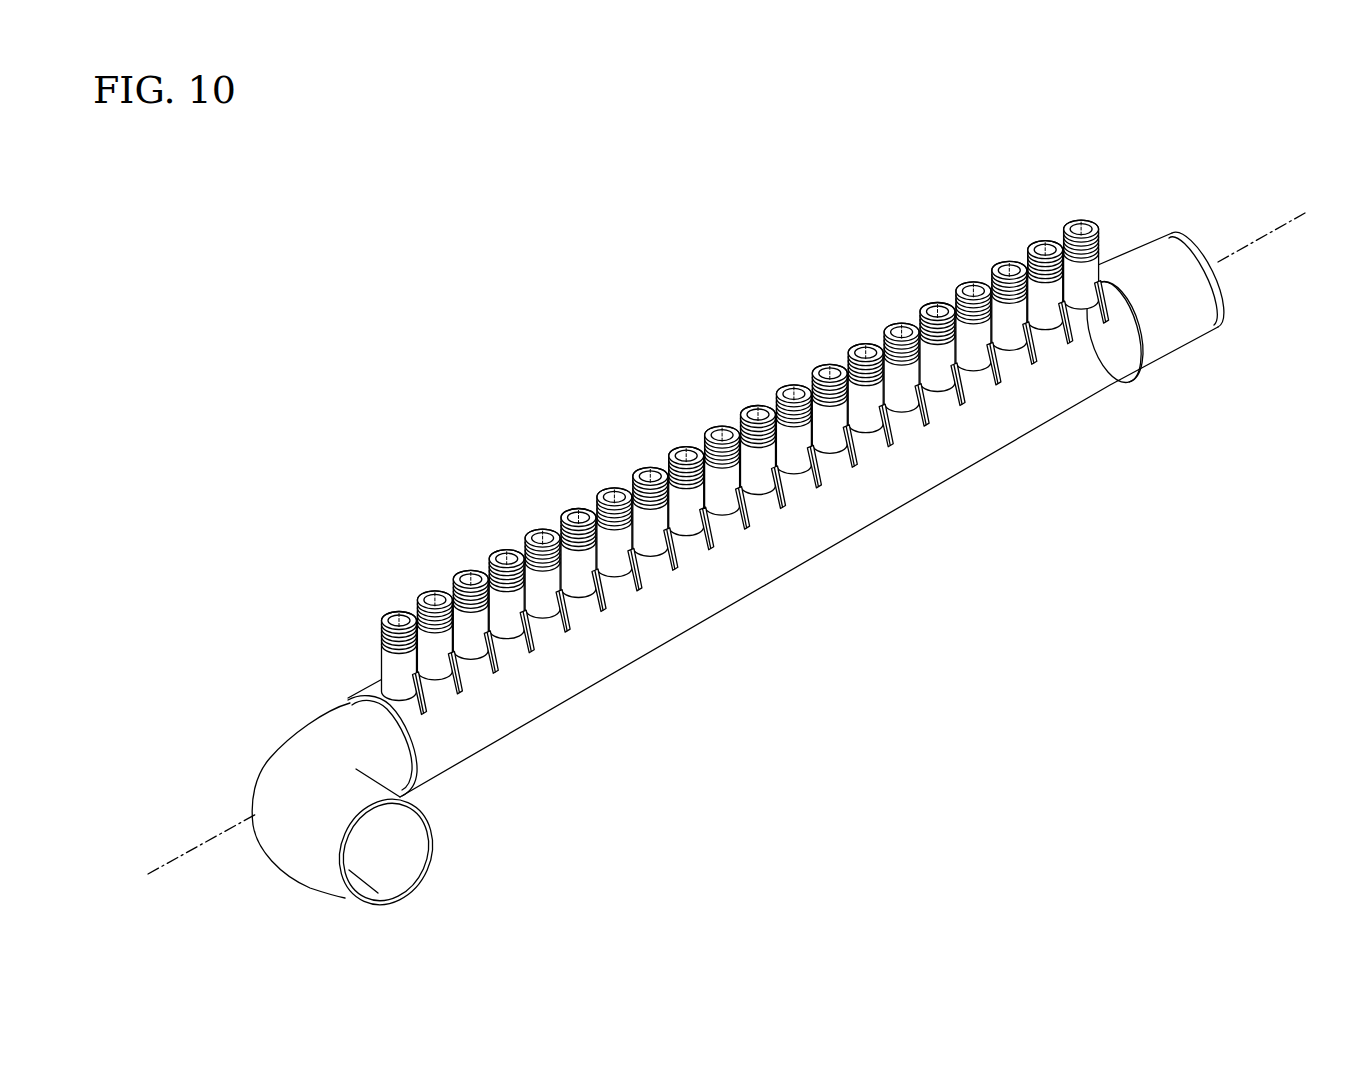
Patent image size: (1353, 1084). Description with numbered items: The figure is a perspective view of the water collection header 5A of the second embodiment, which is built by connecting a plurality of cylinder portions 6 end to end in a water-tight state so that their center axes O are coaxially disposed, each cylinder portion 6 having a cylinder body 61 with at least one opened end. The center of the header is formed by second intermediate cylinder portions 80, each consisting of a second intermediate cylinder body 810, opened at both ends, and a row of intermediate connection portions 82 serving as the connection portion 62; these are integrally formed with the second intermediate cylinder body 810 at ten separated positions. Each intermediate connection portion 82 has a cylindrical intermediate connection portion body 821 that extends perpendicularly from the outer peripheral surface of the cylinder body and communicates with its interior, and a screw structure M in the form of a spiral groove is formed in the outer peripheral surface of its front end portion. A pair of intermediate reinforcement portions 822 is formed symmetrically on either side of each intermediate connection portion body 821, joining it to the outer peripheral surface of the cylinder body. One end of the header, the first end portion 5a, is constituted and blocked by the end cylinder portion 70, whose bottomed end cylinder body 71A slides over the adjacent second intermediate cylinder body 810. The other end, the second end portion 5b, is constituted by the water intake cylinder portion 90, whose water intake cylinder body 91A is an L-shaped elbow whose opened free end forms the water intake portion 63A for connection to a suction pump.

The water collection header 5A is at (743, 524).
The first end portion 5a is at (1193, 243).
The second end portion 5b is at (258, 812).
The center axis O is at (1268, 245).
The cylinder portion 6 is at (743, 561).
The cylinder body 61 is at (743, 561).
The connection portion 62 is at (742, 490).
The end cylinder portion 70 is at (1208, 295).
The end cylinder body 71A is at (1195, 306).
The second intermediate cylinder portion 80 is at (783, 580).
The second intermediate cylinder body 810 is at (623, 665).
The intermediate connection portion 82 is at (742, 490).
The intermediate connection portion body 821 is at (440, 660).
The intermediate reinforcement portion 822 is at (498, 666).
The water intake cylinder portion 90 is at (322, 804).
The water intake cylinder body 91A is at (306, 849).
The water intake portion 63A is at (402, 852).
The screw structure M is at (390, 635).